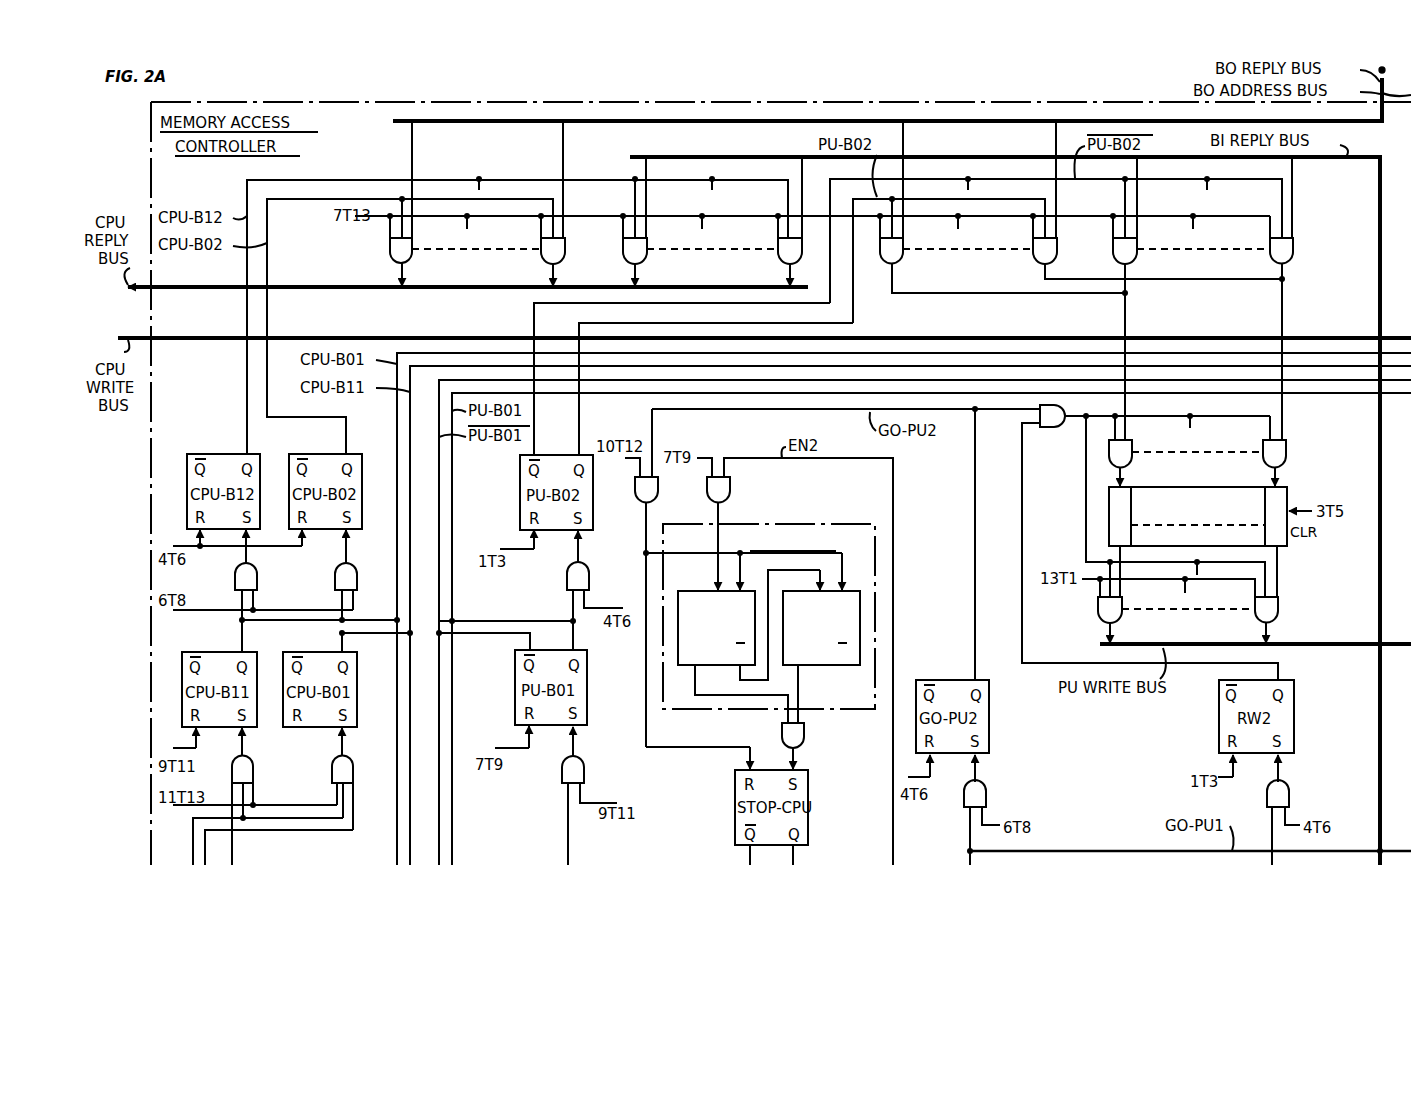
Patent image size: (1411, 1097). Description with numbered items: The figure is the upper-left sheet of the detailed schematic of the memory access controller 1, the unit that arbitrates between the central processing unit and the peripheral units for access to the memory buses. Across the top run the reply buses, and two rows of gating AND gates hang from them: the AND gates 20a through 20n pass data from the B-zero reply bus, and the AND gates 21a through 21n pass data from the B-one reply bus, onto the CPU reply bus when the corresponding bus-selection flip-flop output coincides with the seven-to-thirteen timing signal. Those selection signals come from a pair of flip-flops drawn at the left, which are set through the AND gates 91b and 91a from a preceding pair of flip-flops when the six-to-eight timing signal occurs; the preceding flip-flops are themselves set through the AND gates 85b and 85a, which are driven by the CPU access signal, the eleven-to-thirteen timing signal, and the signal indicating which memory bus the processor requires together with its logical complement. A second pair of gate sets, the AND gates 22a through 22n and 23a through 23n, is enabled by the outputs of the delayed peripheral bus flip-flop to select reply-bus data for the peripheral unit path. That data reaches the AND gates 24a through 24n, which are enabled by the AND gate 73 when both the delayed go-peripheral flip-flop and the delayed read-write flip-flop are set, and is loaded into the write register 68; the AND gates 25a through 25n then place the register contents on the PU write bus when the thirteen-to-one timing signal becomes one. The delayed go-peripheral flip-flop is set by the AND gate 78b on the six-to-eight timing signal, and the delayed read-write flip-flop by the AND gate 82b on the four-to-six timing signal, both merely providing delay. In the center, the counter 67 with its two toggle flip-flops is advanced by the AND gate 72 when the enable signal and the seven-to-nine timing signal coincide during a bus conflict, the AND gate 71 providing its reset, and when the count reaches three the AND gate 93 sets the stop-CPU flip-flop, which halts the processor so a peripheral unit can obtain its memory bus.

The memory access controller 1 is at (765, 102).
The AND gate 20a is at (410, 258).
The AND gate 20n is at (562, 258).
The AND gate 21a is at (645, 258).
The AND gate 21n is at (800, 258).
The AND gate 22a is at (901, 258).
The AND gate 22n is at (1055, 258).
The AND gate 23a is at (1135, 258).
The AND gate 23n is at (1291, 258).
The AND gate 24a is at (1130, 462).
The AND gate 24n is at (1284, 462).
The AND gate 25a is at (1120, 618).
The AND gate 25n is at (1276, 618).
The counter 67 is at (850, 524).
The write register 68 is at (1287, 546).
The AND gate 71 is at (635, 485).
The AND gate 72 is at (728, 487).
The AND gate 73 is at (1048, 427).
The AND gate 78b is at (986, 796).
The AND gate 82b is at (1289, 796).
The AND gate 85a is at (253, 775).
The AND gate 85b is at (353, 775).
The AND gate 91a is at (257, 578).
The AND gate 91b is at (357, 578).
The AND gate 93 is at (804, 734).